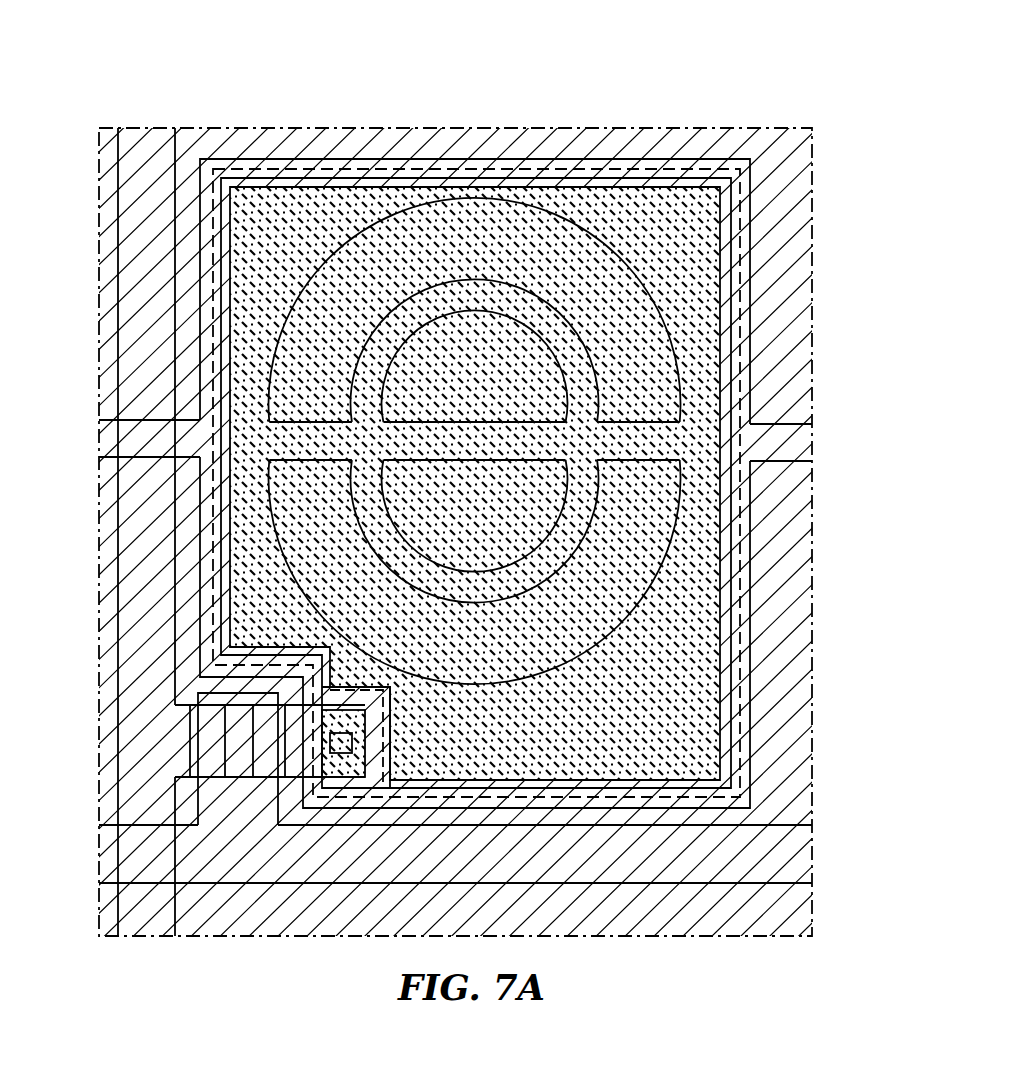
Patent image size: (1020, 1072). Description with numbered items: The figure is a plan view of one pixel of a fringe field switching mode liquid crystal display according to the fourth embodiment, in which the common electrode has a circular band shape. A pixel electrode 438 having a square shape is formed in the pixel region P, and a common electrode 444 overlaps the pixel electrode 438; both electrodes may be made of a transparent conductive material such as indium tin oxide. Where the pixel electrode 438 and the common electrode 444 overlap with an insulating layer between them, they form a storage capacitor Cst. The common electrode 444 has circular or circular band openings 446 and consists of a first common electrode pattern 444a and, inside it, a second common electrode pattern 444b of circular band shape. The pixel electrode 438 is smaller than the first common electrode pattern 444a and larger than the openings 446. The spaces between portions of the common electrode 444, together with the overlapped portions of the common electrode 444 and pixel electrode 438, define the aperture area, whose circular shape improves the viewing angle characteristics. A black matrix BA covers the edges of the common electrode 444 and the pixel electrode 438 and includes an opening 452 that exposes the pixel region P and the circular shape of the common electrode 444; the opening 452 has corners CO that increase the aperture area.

The common electrode 444 is at (433, 33).
The first common electrode pattern 444a is at (363, 158).
The second common electrode pattern 444b is at (437, 338).
The openings 446 is at (511, 280).
The opening 452 is at (598, 178).
The black matrix BA is at (675, 150).
The storage capacitor Cst is at (742, 170).
The pixel electrode 438 is at (735, 292).
The pixel region P is at (186, 203).
The corners CO is at (238, 196).